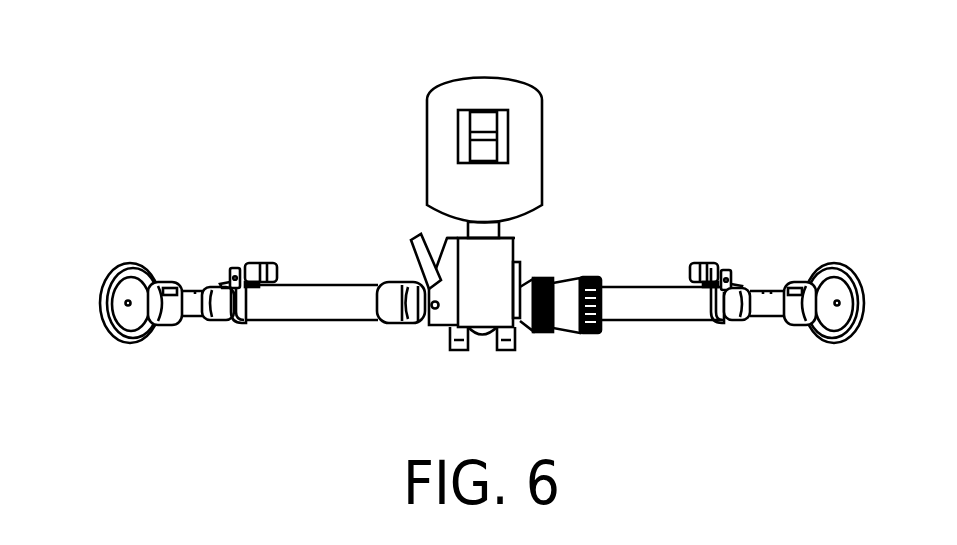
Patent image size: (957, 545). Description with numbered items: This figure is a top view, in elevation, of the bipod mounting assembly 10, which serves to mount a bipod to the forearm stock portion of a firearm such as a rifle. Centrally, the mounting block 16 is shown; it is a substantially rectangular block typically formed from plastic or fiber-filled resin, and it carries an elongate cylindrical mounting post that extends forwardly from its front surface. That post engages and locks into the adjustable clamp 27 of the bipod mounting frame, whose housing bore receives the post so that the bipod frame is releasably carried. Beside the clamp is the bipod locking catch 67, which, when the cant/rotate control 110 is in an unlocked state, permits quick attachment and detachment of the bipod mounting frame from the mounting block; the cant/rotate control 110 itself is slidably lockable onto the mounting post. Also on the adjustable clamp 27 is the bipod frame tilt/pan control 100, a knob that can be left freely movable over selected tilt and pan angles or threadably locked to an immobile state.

The bipod mounting assembly 10 is at (338, 133).
The mounting block 16 is at (527, 137).
The adjustable clamp 27 is at (473, 308).
The bipod locking catch 67 is at (412, 253).
The bipod frame tilt/pan control 100 is at (590, 336).
The cant/rotate control 110 is at (543, 332).